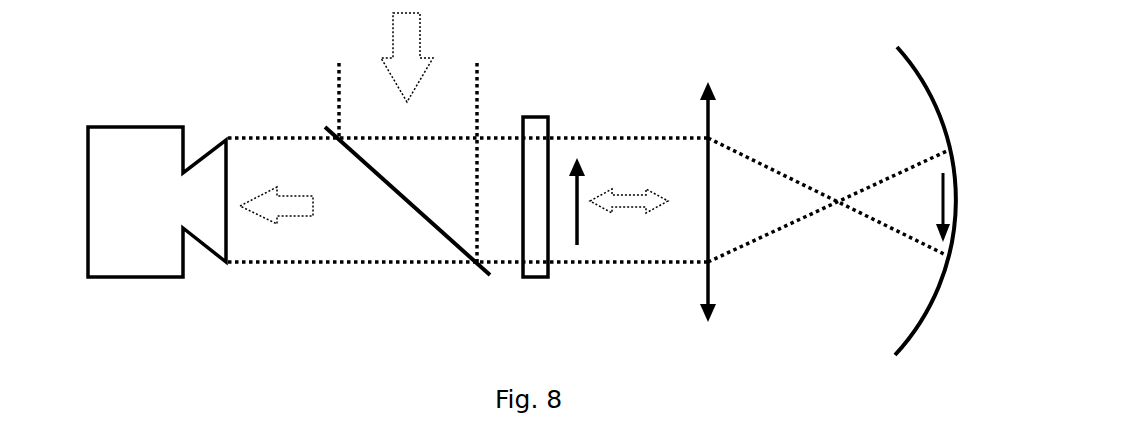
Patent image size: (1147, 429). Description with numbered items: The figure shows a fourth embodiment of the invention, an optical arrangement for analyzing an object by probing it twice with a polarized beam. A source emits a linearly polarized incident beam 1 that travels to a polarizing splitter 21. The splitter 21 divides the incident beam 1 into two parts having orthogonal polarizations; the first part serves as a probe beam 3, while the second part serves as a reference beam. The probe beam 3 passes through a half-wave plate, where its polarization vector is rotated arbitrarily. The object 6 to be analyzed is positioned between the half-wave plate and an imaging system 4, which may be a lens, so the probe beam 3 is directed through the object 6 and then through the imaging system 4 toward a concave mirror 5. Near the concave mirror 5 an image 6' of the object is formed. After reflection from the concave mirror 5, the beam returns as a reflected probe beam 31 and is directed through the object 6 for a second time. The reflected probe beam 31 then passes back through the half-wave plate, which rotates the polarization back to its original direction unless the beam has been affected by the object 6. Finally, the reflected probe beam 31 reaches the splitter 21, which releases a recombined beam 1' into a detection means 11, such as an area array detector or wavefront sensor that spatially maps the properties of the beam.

The linearly polarized incident beam 1 is at (441, 57).
The recombined beam 1' is at (276, 250).
The detection means 11 is at (185, 263).
The polarizing splitter 21 is at (465, 262).
The object 6 is at (594, 261).
The probe beam 3 is at (637, 137).
The reflected probe beam 31 is at (607, 190).
The imaging system 4 is at (710, 113).
The concave mirror 5 is at (940, 117).
The image of the object 6' is at (892, 255).